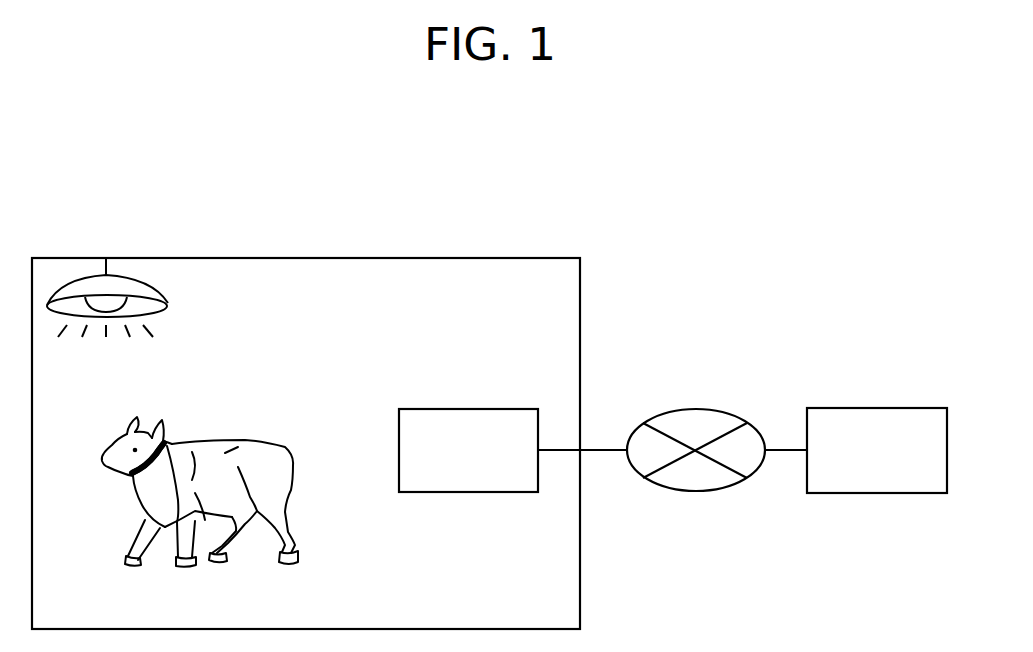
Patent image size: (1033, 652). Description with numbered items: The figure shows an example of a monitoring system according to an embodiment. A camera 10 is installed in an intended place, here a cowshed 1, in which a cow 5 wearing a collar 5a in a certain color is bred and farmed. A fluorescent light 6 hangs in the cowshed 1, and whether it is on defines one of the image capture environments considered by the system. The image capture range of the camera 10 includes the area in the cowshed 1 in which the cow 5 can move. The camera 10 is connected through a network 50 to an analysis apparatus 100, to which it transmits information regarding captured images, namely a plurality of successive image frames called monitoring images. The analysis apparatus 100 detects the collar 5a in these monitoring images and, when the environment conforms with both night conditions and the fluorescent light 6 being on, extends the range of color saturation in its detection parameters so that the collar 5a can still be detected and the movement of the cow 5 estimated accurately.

The cowshed 1 is at (513, 239).
The fluorescent light 6 is at (132, 280).
The cow 5 is at (255, 443).
The collar 5a is at (177, 446).
The camera 10 is at (470, 393).
The network 50 is at (726, 394).
The analysis apparatus 100 is at (880, 393).